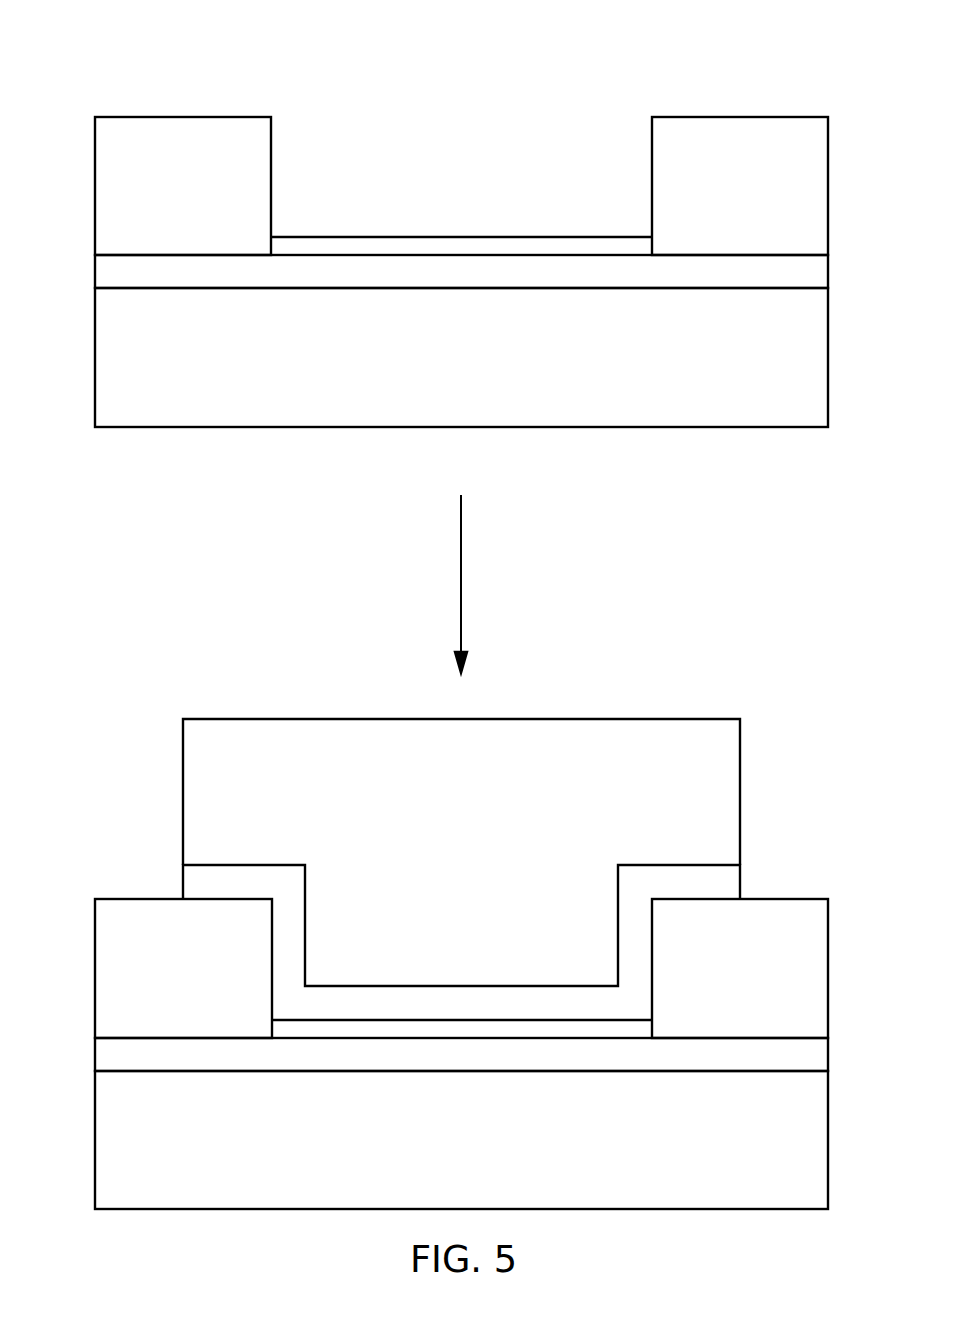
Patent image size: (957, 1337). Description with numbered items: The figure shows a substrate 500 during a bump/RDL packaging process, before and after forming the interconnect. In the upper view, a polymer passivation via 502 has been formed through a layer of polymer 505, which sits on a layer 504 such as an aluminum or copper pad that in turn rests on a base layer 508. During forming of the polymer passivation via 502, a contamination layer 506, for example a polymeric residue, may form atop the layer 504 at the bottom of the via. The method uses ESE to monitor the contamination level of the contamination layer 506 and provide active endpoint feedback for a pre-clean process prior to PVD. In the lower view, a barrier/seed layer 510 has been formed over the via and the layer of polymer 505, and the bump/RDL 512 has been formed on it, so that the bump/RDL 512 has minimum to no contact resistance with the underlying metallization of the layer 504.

The substrate 500 is at (176, 48).
The polymer passivation via 502 is at (540, 80).
The layer 504 is at (95, 273).
The layer of polymer 505 is at (738, 117).
The contamination layer 506 is at (330, 248).
The base layer 508 is at (95, 366).
The barrier/seed layer 510 is at (183, 880).
The bump/RDL 512 is at (578, 718).